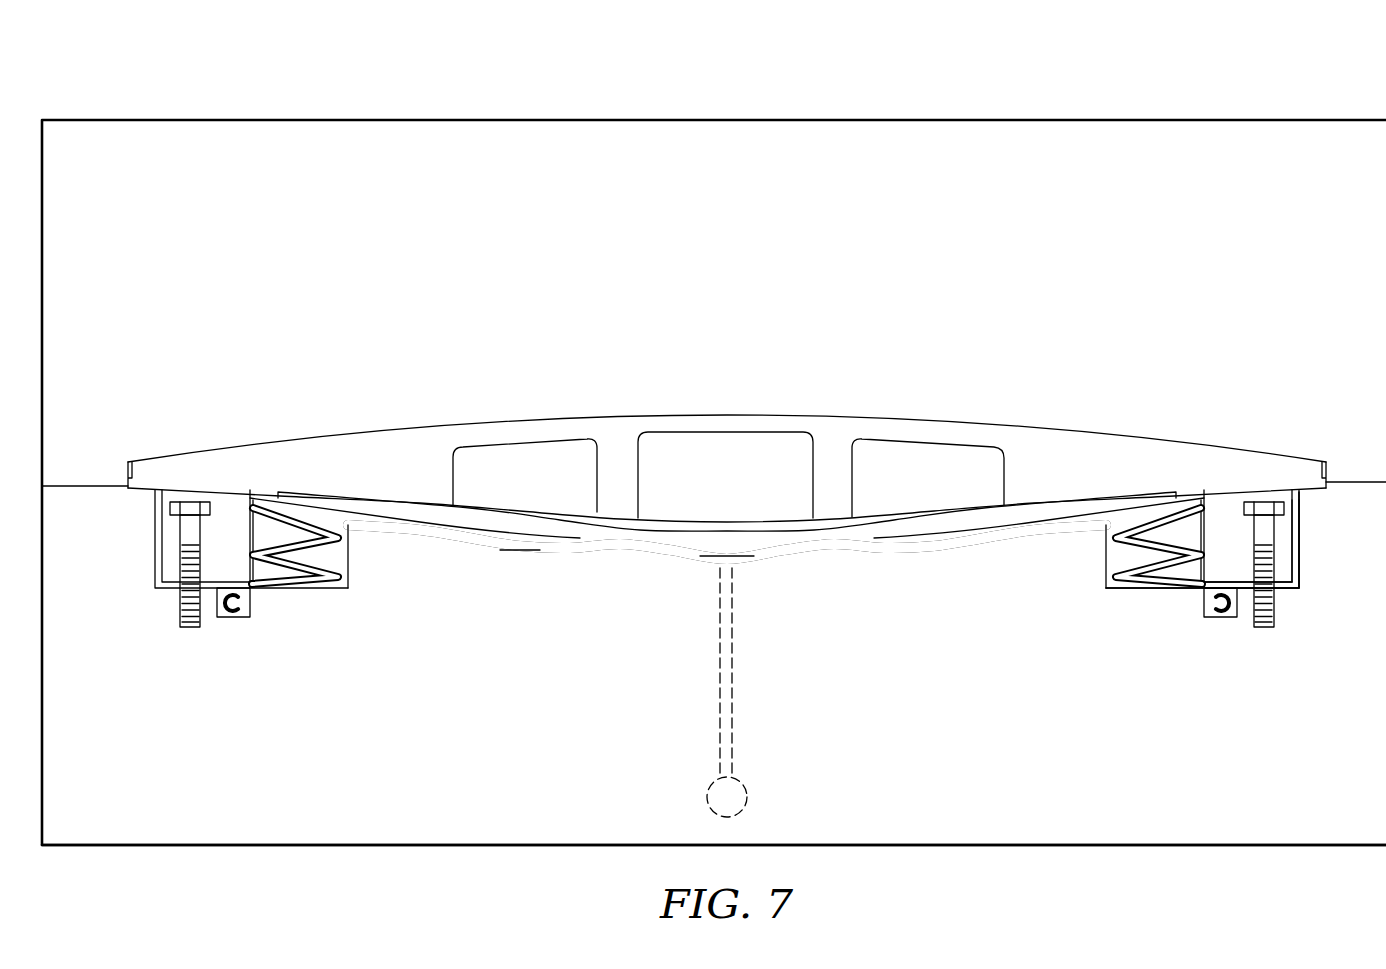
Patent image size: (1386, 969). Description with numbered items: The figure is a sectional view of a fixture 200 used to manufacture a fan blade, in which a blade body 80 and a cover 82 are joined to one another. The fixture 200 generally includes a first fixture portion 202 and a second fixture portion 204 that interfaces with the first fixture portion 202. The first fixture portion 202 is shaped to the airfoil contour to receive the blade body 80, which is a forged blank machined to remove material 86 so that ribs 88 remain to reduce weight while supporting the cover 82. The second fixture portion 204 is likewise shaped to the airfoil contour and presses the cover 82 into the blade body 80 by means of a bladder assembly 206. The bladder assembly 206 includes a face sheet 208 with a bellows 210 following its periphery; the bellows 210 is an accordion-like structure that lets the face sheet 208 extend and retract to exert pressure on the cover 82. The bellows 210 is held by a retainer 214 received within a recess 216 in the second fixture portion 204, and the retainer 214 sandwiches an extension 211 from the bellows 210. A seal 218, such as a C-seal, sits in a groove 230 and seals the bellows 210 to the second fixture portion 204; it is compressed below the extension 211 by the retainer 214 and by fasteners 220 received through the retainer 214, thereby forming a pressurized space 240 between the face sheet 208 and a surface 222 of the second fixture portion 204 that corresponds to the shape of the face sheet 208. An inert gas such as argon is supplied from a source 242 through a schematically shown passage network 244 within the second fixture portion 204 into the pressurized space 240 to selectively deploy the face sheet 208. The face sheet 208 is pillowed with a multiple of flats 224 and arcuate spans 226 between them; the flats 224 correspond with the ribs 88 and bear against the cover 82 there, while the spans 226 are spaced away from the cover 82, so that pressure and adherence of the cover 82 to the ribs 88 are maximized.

The fixture 200 is at (1137, 98).
The first fixture portion 202 is at (1347, 279).
The second fixture portion 204 is at (1368, 786).
The blade body 80 is at (1165, 450).
The cover 82 is at (1078, 507).
The material 86 is at (540, 487).
The ribs 88 is at (625, 455).
The bladder assembly 206 is at (1323, 562).
The face sheet 208 is at (777, 560).
The bellows 210 is at (1137, 555).
The extension 211 is at (1243, 592).
The retainer 214 is at (232, 520).
The recess 216 is at (1297, 575).
The seal 218 is at (1195, 590).
The fasteners 220 is at (190, 502).
The surface 222 is at (900, 556).
The flats 224 is at (833, 527).
The spans 226 is at (742, 548).
The groove 230 is at (1230, 618).
The pressurized space 240 is at (520, 548).
The source 242 is at (748, 793).
The passage network 244 is at (733, 723).